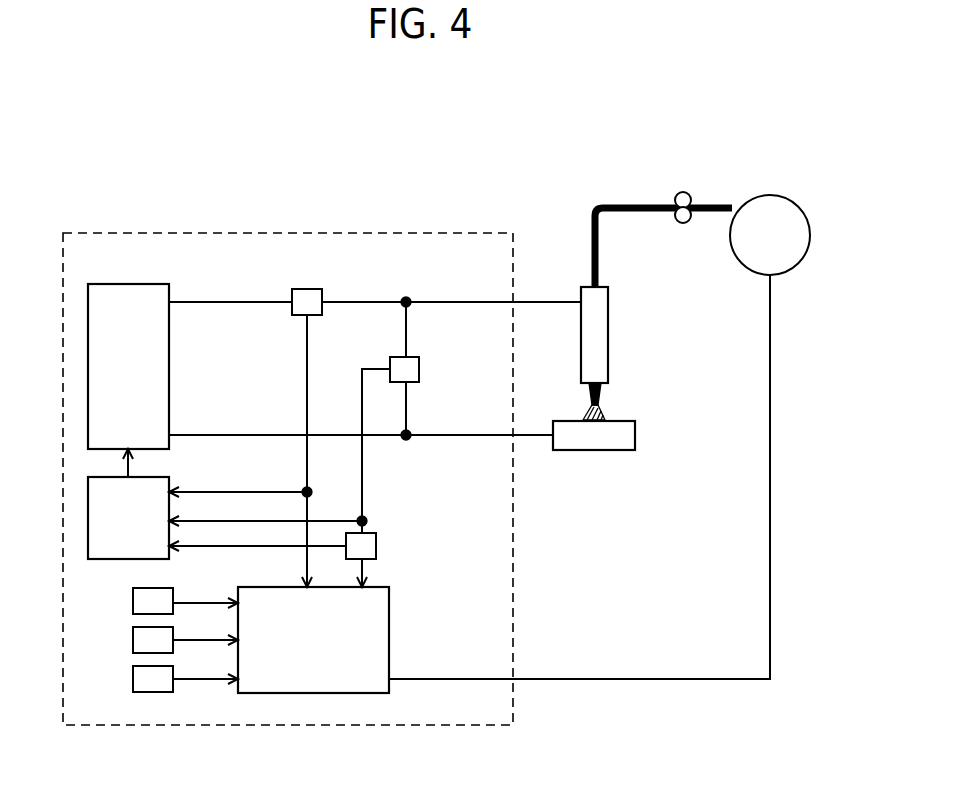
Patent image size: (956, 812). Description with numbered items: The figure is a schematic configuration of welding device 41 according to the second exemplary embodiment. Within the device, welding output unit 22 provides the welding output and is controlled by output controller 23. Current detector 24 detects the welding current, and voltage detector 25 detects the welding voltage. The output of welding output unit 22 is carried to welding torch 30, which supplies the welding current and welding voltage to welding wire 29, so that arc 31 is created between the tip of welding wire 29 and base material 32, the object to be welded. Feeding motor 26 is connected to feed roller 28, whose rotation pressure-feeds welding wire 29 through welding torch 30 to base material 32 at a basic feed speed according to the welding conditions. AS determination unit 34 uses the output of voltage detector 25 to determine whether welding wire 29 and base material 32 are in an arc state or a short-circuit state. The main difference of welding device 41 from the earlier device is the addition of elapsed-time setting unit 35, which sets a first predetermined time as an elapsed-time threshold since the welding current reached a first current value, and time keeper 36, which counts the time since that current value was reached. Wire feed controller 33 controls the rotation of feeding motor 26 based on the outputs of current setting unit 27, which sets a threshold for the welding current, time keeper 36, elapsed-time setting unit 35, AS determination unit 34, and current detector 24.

The welding output unit 22 is at (130, 283).
The output controller 23 is at (165, 471).
The current detector 24 is at (310, 288).
The voltage detector 25 is at (419, 370).
The feeding motor 26 is at (768, 195).
The current setting unit 27 is at (133, 601).
The feed roller 28 is at (680, 191).
The welding wire 29 is at (603, 203).
The welding torch 30 is at (608, 343).
The arc 31 is at (603, 411).
The base material 32 is at (597, 453).
The wire feed controller 33 is at (389, 637).
The AS determination unit 34 is at (376, 548).
The elapsed-time setting unit 35 is at (133, 641).
The time keeper 36 is at (133, 680).
The welding device 41 is at (410, 727).